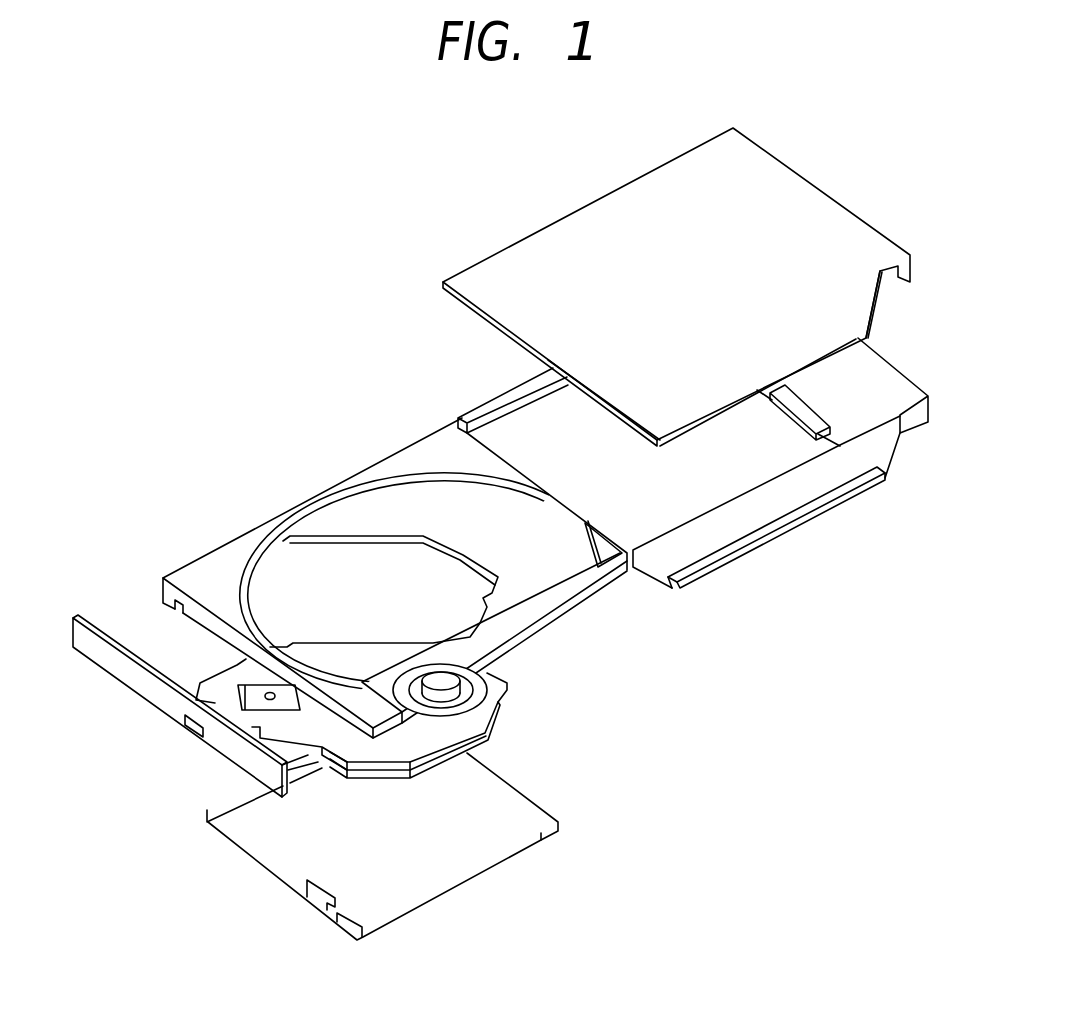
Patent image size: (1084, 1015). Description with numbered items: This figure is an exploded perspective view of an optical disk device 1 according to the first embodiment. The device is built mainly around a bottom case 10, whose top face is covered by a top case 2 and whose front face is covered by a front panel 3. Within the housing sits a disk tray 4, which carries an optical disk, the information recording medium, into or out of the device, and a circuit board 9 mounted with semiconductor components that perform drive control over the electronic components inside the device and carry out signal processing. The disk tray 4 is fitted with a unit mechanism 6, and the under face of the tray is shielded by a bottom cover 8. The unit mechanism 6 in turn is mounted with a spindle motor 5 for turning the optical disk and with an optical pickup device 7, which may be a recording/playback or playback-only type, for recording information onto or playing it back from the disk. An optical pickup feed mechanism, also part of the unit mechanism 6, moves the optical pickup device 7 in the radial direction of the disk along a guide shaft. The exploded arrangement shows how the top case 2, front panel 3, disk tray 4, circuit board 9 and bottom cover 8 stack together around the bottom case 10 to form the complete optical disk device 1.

The optical disk device 1 is at (259, 268).
The top case 2 is at (793, 183).
The front panel 3 is at (140, 687).
The disk tray 4 is at (340, 494).
The spindle motor 5 is at (448, 681).
The unit mechanism 6 is at (474, 722).
The optical pickup device 7 is at (227, 695).
The bottom cover 8 is at (437, 880).
The circuit board 9 is at (853, 381).
The bottom case 10 is at (763, 513).